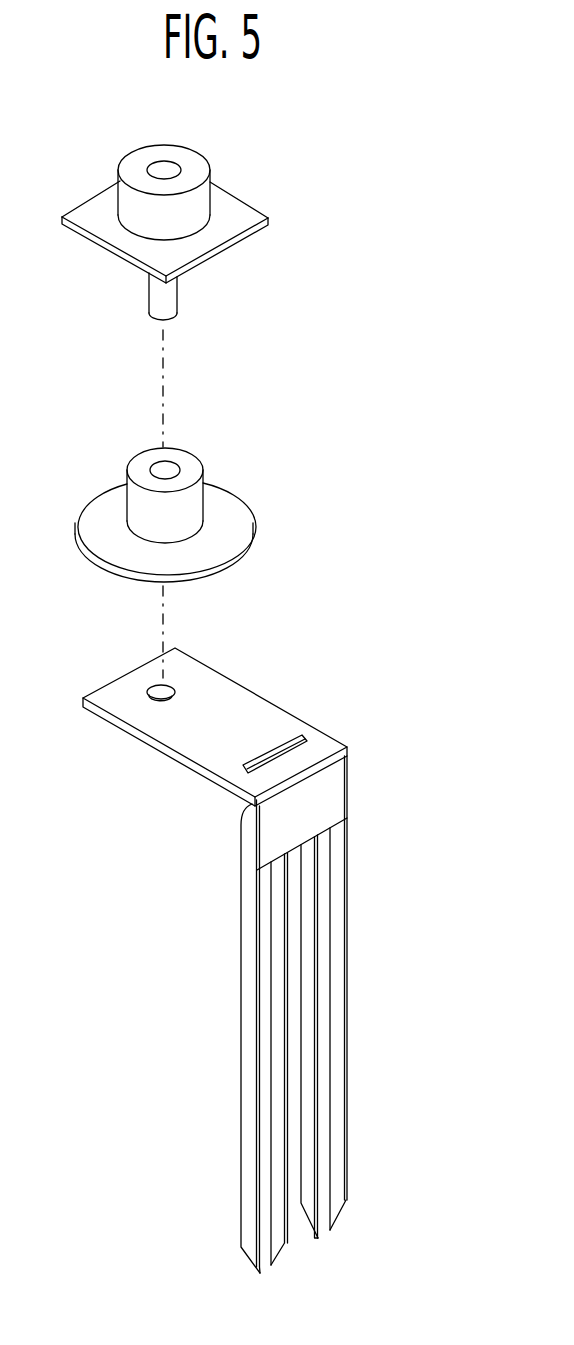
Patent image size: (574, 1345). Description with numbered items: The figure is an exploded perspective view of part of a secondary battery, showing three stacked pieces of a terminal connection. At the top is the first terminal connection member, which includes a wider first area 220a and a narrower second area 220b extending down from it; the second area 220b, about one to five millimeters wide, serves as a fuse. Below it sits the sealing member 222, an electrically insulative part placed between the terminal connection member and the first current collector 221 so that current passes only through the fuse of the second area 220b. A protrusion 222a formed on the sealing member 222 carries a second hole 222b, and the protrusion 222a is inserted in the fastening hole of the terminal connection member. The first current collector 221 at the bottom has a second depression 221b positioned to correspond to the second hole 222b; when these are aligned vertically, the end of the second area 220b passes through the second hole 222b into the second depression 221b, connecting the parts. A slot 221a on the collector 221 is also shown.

The first area 220a is at (203, 192).
The second area 220b is at (168, 304).
The sealing member 222 is at (253, 505).
The protrusion 222a is at (198, 458).
The second hole 222b is at (167, 463).
The first current collector 221 is at (323, 788).
The slot 221a is at (281, 743).
The second depression 221b is at (167, 692).